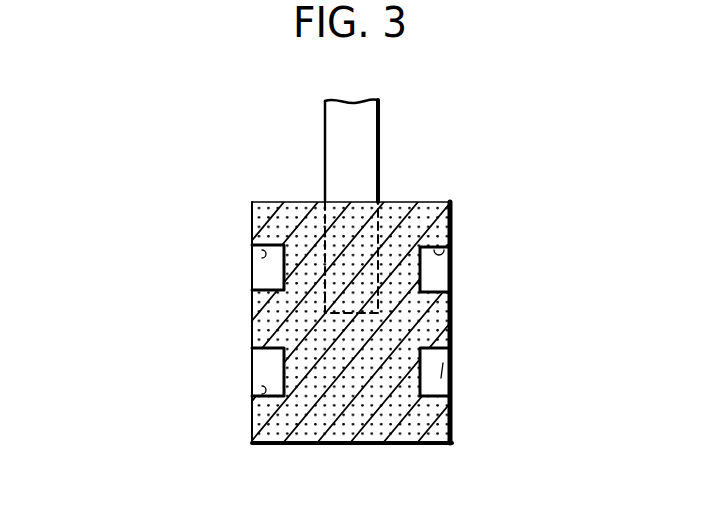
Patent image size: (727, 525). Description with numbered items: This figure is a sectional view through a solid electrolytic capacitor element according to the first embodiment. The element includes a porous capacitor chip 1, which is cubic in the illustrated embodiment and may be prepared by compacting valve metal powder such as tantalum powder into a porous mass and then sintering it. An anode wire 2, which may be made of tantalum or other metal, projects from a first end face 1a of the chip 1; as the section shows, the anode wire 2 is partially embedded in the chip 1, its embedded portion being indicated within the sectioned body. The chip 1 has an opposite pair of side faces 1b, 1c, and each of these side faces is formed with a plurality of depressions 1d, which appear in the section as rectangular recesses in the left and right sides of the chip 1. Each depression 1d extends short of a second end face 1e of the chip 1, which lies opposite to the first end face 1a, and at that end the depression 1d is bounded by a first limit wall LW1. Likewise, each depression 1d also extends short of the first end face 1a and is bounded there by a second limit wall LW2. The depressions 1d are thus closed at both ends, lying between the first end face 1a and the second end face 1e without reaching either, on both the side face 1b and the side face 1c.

The porous capacitor chip 1 is at (252, 205).
The first end face 1a is at (407, 203).
The side face 1b is at (251, 415).
The side face 1c is at (453, 426).
The depression 1d is at (267, 373).
The second end face 1e is at (399, 446).
The anode wire 2 is at (367, 135).
The first limit wall LW1 is at (251, 380).
The second limit wall LW2 is at (258, 251).